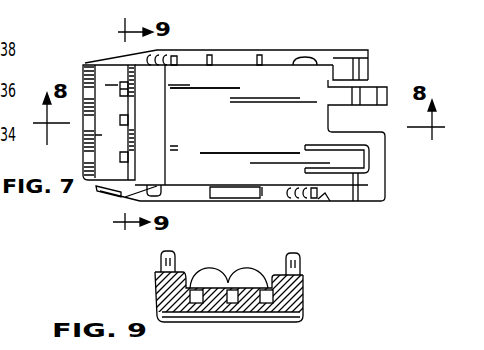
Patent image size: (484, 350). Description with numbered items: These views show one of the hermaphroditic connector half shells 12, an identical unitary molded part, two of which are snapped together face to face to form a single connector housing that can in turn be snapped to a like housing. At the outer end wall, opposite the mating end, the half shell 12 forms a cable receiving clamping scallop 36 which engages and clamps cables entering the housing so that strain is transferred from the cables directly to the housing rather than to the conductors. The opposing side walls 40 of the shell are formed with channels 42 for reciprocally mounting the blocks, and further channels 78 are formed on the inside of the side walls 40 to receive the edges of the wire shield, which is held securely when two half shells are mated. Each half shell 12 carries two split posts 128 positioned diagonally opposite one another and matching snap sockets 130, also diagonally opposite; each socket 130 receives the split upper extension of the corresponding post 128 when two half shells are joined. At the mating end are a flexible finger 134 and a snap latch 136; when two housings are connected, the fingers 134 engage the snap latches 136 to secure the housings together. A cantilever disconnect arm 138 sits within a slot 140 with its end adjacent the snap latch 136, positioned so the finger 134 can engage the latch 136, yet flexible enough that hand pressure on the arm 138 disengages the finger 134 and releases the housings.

In FIG. 7, the hermaphroditic connector half shell 12 is at (107, 57).
In FIG. 7, the cable receiving clamping scallop 36 is at (128, 93).
In FIG. 9, the cable receiving clamping scallop 36 is at (232, 270).
In FIG. 7, the side wall 40 is at (197, 53).
In FIG. 7, the channel 42 is at (242, 185).
In FIG. 7, the channel 78 is at (209, 185).
In FIG. 7, the split post 128 is at (160, 62).
In FIG. 9, the split post 128 is at (160, 263).
In FIG. 7, the snap socket 130 is at (302, 50).
In FIG. 7, the flexible finger 134 is at (387, 95).
In FIG. 7, the snap latch 136 is at (382, 189).
In FIG. 7, the cantilever disconnect arm 138 is at (360, 162).
In FIG. 7, the slot 140 is at (335, 173).